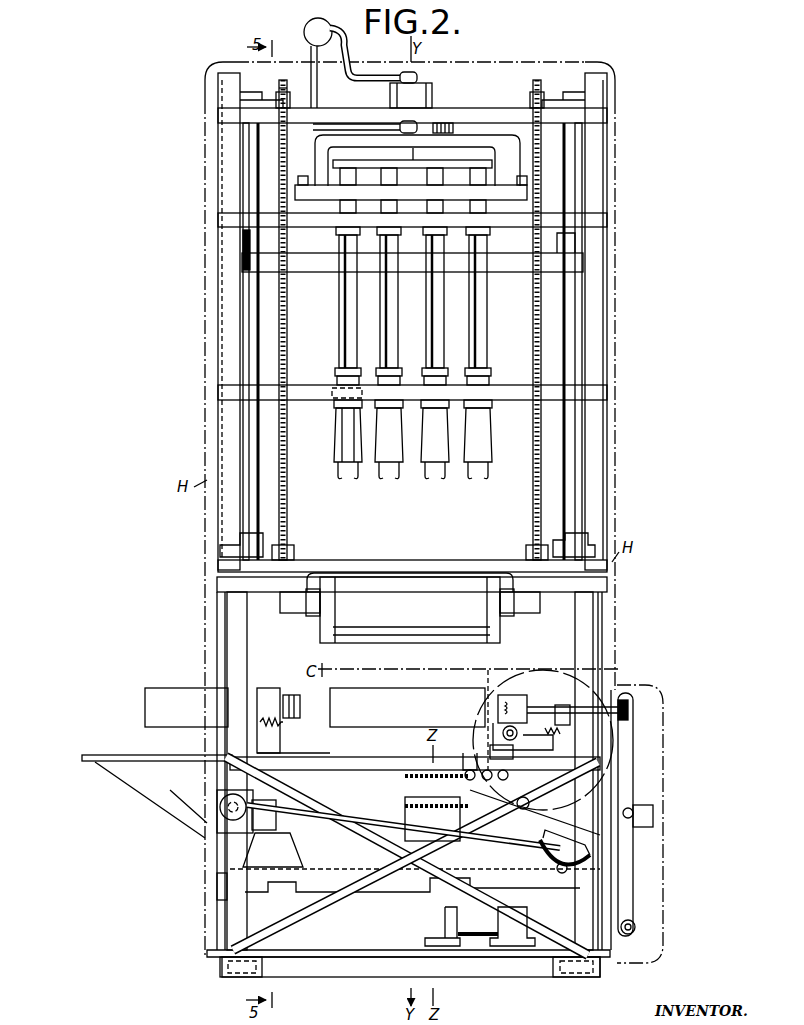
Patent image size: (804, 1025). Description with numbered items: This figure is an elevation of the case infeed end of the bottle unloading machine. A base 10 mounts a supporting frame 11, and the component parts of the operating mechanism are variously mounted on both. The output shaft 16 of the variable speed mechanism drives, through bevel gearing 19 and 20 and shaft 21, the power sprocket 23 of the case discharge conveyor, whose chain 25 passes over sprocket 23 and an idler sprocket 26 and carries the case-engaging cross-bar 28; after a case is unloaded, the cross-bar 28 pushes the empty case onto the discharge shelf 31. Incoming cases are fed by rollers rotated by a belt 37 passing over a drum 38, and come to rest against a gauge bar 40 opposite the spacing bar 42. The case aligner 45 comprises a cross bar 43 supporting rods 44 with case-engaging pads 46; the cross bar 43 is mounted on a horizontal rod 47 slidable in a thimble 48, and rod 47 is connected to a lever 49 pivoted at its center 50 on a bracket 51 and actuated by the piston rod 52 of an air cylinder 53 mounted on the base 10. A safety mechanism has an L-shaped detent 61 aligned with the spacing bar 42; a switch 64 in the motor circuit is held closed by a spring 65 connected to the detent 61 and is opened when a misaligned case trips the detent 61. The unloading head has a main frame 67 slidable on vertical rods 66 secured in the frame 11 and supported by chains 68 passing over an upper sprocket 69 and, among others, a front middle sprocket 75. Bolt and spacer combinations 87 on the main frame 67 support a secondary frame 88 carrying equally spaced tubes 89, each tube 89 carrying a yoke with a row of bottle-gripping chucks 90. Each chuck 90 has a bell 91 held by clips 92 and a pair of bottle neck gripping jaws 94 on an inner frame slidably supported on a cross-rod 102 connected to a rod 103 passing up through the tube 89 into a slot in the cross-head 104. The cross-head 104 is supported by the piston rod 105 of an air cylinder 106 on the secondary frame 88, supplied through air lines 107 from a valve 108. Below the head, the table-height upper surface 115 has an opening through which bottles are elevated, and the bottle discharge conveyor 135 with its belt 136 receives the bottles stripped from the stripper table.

The base 10 is at (322, 975).
The supporting frame 11 is at (230, 915).
The output shaft 16 is at (565, 861).
The bevel gearing 19 is at (563, 874).
The bevel gearing 20 is at (217, 838).
The shaft 21 is at (358, 820).
The power sprocket 23 is at (215, 792).
The chain 25 is at (477, 758).
The idler sprocket 26 is at (562, 824).
The case-engaging cross-bar 28 is at (509, 734).
The discharge shelf 31 is at (105, 757).
The belt 37 is at (406, 794).
The drum 38 is at (406, 810).
The gauge bar 40 is at (426, 688).
The spacing bar 42 is at (155, 692).
The cross bar 43 is at (523, 695).
The rods 44 is at (523, 750).
The case aligner 45 is at (534, 711).
The case-engaging pads 46 is at (494, 749).
The horizontal rod 47 is at (554, 720).
The thimble 48 is at (560, 741).
The lever 49 is at (633, 763).
The pivot center 50 is at (633, 808).
The bracket 51 is at (653, 818).
The piston rod 52 is at (632, 925).
The air cylinder 53 is at (481, 946).
The L-shaped detent 61 is at (302, 701).
The switch 64 is at (265, 692).
The spring 65 is at (286, 180).
The vertical rods 66 is at (248, 302).
The main frame 67 is at (243, 255).
The chains 68 is at (283, 340).
The upper sprocket 69 is at (286, 100).
The front middle sprocket 75 is at (285, 552).
The bolt and spacer combinations 87 is at (220, 230).
The secondary frame 88 is at (321, 142).
The tubes 89 is at (342, 236).
The bottle-gripping chucks 90 is at (340, 440).
The bell 91 is at (340, 448).
The clips 92 is at (338, 417).
The bottle neck gripping jaws 94 is at (336, 468).
The cross-rod 102 is at (352, 409).
The rod 103 is at (372, 166).
The cross-head 104 is at (488, 170).
The piston rod 105 is at (420, 157).
The air cylinder 106 is at (433, 100).
The air lines 107 is at (372, 127).
The valve 108 is at (313, 24).
The upper surface 115 is at (346, 562).
The bottle discharge conveyor 135 is at (313, 631).
The belt 136 is at (410, 621).